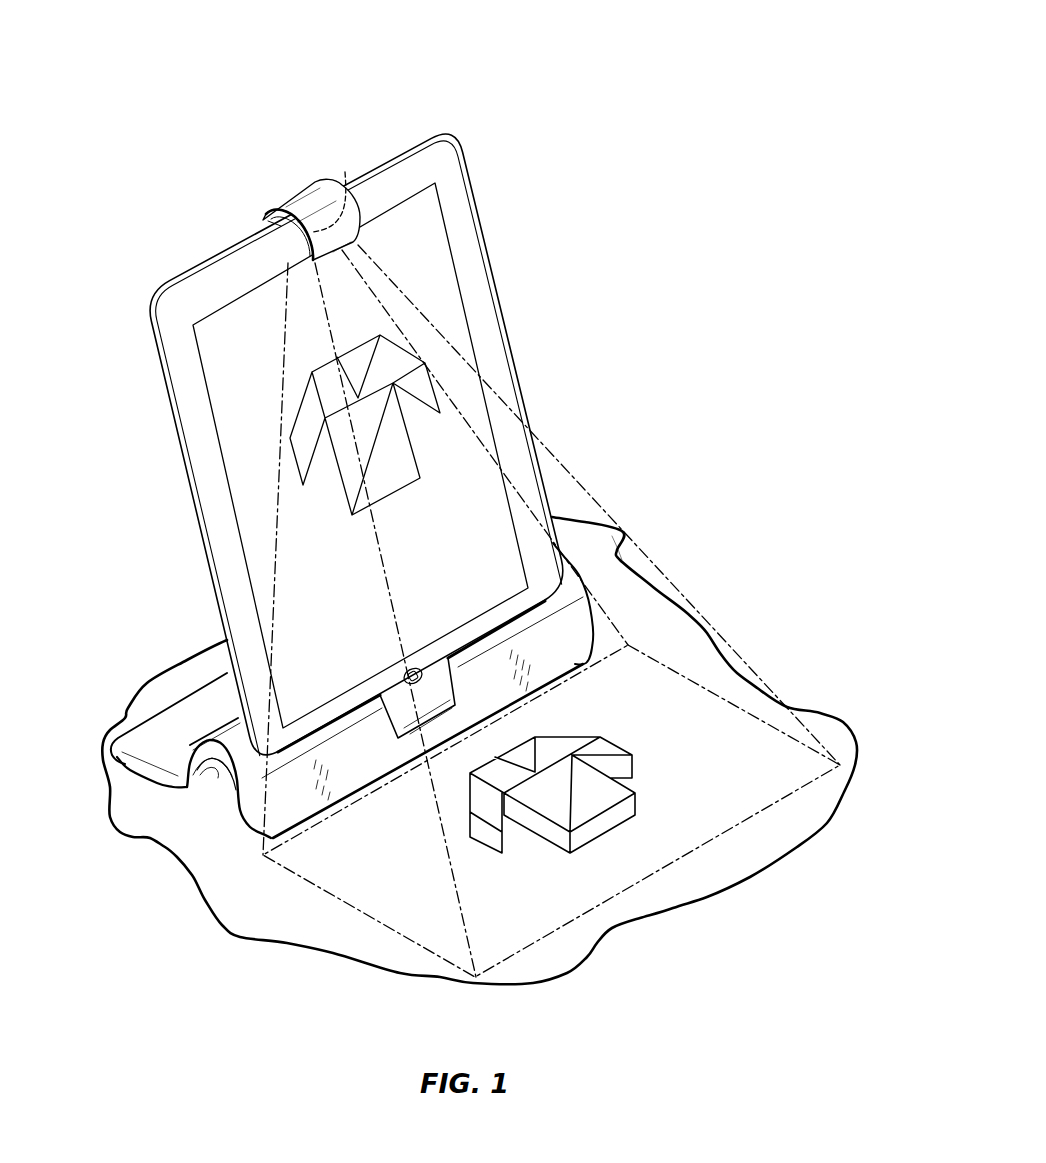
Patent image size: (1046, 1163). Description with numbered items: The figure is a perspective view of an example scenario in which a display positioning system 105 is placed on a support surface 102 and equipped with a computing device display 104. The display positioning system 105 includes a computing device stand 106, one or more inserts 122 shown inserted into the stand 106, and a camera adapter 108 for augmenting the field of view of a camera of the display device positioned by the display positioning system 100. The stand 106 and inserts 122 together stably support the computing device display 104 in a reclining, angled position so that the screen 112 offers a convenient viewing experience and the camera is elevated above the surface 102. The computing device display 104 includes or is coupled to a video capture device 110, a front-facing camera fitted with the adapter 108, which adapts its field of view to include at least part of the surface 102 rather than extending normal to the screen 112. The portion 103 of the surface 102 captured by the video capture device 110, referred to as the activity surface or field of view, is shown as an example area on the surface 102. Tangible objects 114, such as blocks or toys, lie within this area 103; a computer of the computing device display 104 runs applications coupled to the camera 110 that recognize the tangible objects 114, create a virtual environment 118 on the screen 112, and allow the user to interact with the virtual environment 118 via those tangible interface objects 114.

The display positioning system 100 is at (479, 496).
The support surface 102 is at (813, 717).
The portion of the surface 103 is at (657, 873).
The computing device display 104 is at (487, 318).
The display positioning system 105 is at (610, 541).
The computing device stand 106 is at (203, 718).
The camera adapter 108 is at (303, 203).
The video capture device 110 is at (345, 172).
The screen 112 is at (443, 280).
The tangible objects 114 is at (568, 742).
The virtual environment 118 is at (413, 445).
The inserts 122 is at (200, 767).